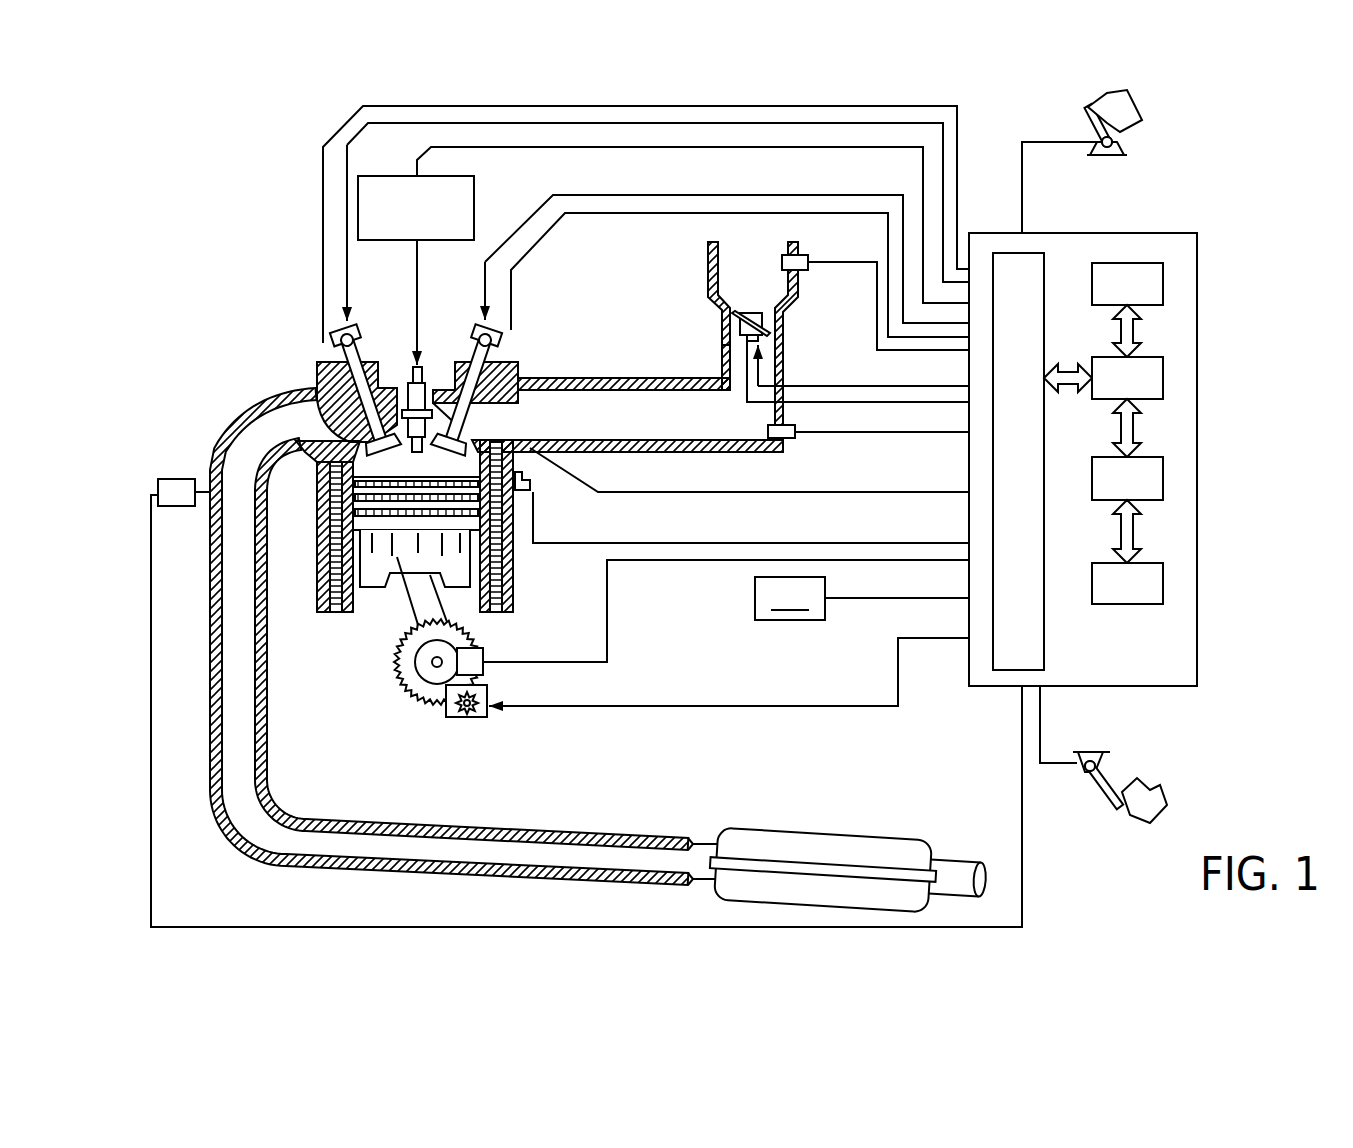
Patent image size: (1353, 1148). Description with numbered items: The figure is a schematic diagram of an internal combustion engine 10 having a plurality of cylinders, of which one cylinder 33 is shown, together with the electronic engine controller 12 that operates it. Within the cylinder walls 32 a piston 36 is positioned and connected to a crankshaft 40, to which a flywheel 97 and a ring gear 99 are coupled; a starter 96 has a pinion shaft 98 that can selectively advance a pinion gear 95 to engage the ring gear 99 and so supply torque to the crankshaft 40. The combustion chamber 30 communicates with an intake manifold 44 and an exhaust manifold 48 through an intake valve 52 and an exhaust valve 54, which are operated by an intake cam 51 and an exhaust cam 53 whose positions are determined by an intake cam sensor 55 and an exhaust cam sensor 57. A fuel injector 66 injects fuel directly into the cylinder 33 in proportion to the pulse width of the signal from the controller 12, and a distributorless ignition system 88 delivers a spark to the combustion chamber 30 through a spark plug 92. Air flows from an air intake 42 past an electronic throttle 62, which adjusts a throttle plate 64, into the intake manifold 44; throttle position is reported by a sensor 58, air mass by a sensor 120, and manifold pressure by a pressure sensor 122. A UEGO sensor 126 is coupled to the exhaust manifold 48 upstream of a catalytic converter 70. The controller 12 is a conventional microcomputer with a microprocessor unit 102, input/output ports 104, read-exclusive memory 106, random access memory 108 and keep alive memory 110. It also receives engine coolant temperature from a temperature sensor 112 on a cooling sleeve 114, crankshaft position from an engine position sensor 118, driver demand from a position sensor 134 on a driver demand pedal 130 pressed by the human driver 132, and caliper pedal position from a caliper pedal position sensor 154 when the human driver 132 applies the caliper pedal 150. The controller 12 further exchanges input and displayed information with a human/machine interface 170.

The engine 10 is at (248, 312).
The electronic engine controller 12 is at (1197, 232).
The combustion chamber 30 is at (330, 560).
The cylinder walls 32 is at (340, 618).
The cylinder 33 is at (388, 600).
The piston 36 is at (408, 595).
The crankshaft 40 is at (418, 690).
The air intake 42 is at (737, 289).
The intake manifold 44 is at (677, 429).
The exhaust manifold 48 is at (272, 433).
The intake cam 51 is at (472, 328).
The intake valve 52 is at (470, 426).
The exhaust cam 53 is at (352, 328).
The exhaust valve 54 is at (318, 392).
The intake cam sensor 55 is at (498, 355).
The exhaust cam sensor 57 is at (336, 345).
The throttle position sensor 58 is at (724, 350).
The electronic throttle 62 is at (768, 322).
The throttle plate 64 is at (736, 318).
The fuel injector 66 is at (523, 453).
The catalytic converter 70 is at (735, 830).
The distributorless ignition system 88 is at (374, 176).
The spark plug 92 is at (421, 368).
The pinion gear 95 is at (475, 722).
The starter 96 is at (480, 712).
The flywheel 97 is at (412, 660).
The pinion shaft 98 is at (462, 718).
The ring gear 99 is at (440, 700).
The microprocessor unit 102 is at (1163, 382).
The input/output ports 104 is at (1046, 262).
The read-exclusive memory 106 is at (1163, 282).
The random access memory 108 is at (1163, 483).
The keep alive memory 110 is at (1163, 590).
The temperature sensor 112 is at (530, 490).
The cooling sleeve 114 is at (497, 562).
The engine position sensor 118 is at (488, 650).
The air mass sensor 120 is at (805, 256).
The pressure sensor 122 is at (790, 442).
The UEGO sensor 126 is at (158, 482).
The driver demand pedal 130 is at (1087, 115).
The human driver 132 is at (1135, 102).
The position sensor 134 is at (1125, 145).
The caliper pedal 150 is at (1112, 810).
The caliper pedal position sensor 154 is at (1075, 758).
The human/machine interface 170 is at (790, 598).